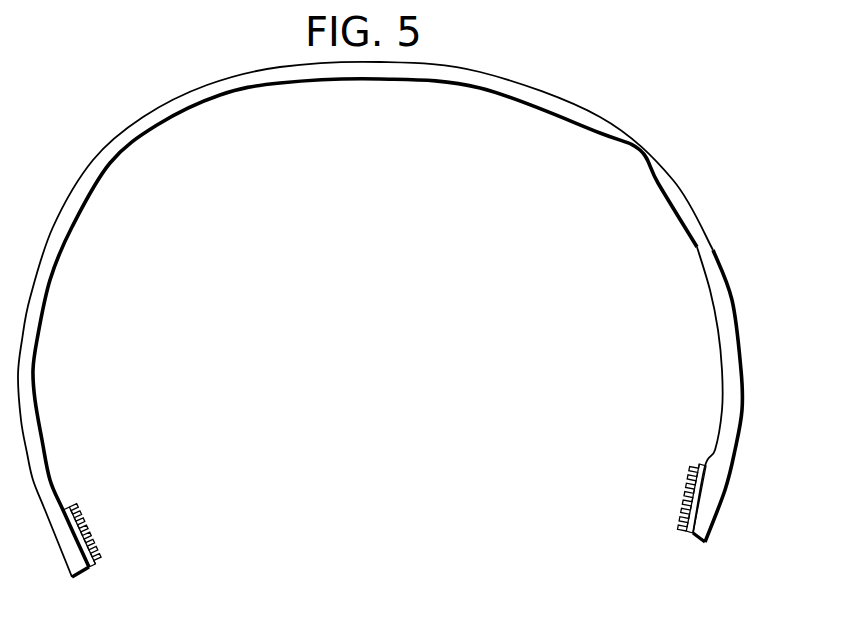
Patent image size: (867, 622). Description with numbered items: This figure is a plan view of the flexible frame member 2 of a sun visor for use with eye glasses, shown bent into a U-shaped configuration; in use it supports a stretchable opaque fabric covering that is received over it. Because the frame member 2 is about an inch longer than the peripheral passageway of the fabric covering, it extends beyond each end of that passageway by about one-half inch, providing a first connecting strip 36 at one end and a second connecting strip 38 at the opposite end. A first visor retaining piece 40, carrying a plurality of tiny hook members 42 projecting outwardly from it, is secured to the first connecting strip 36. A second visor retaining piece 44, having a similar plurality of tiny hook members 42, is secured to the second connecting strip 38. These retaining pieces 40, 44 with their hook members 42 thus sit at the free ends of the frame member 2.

The flexible frame member 2 is at (677, 186).
The first connecting strip 36 is at (58, 547).
The second connecting strip 38 is at (722, 505).
The first visor retaining piece 40 is at (90, 568).
The hook members 42 is at (95, 558).
The second visor retaining piece 44 is at (687, 529).